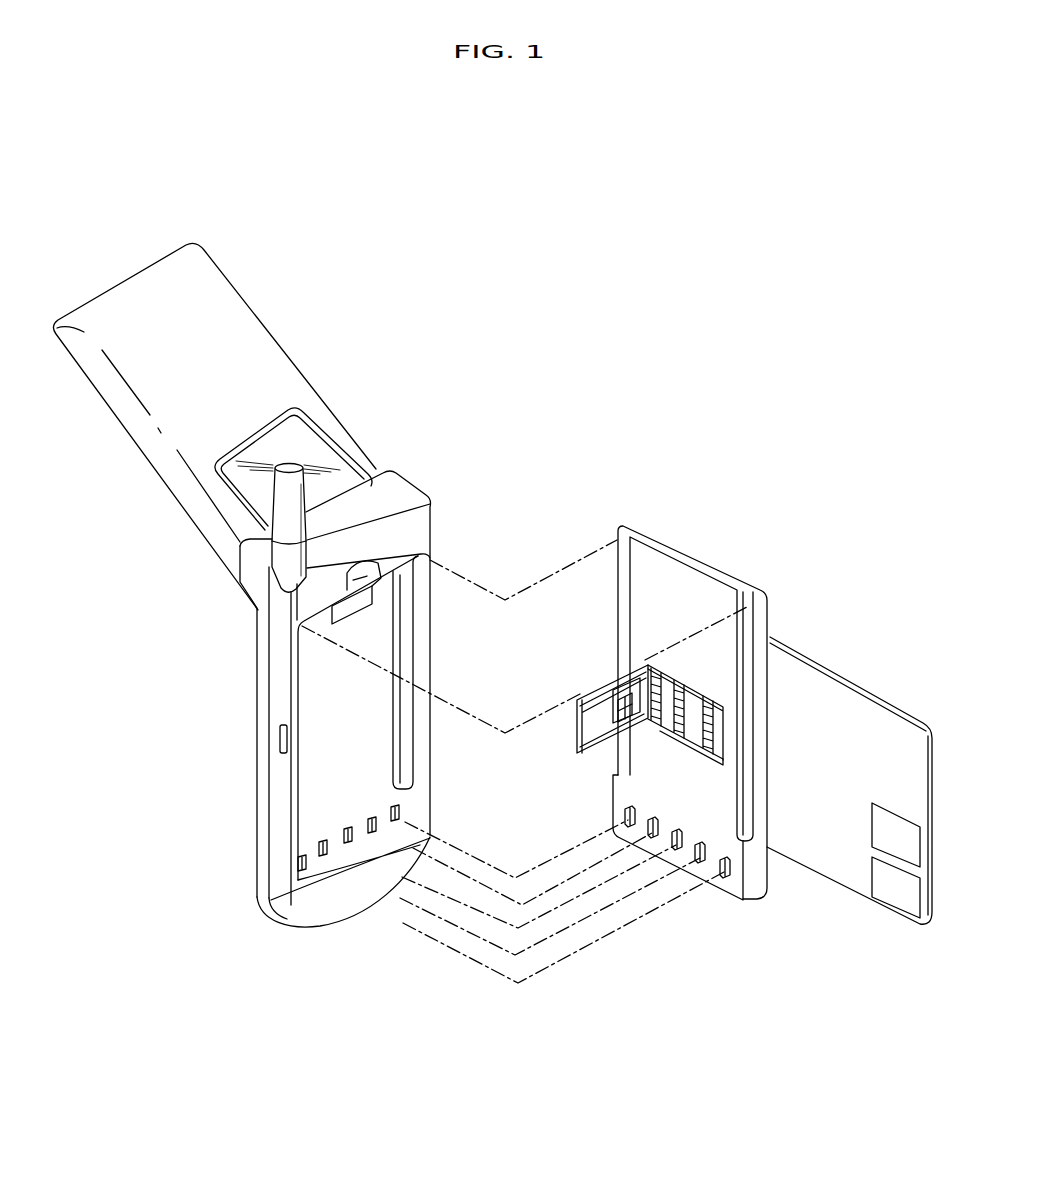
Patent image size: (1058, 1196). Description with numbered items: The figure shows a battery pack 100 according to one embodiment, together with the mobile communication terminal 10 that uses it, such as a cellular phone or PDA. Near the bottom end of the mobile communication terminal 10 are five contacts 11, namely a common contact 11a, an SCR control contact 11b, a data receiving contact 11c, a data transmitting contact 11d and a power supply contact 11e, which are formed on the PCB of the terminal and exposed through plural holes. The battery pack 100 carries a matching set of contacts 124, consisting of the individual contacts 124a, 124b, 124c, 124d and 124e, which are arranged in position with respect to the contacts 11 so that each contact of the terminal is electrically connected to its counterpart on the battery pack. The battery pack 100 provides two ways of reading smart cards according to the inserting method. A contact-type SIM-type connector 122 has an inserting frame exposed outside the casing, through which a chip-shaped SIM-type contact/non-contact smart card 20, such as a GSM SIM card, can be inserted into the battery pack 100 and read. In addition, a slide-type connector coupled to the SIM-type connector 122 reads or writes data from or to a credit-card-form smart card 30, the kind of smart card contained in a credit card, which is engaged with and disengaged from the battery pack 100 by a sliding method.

The mobile communication terminal 10 is at (407, 498).
The contacts 11 is at (339, 909).
The common contact 11a is at (302, 871).
The SCR control contact 11b is at (323, 856).
The data receiving contact 11c is at (348, 843).
The data transmitting contact 11d is at (372, 833).
The power supply contact 11e is at (412, 884).
The battery pack 100 is at (695, 563).
The SIM-type connector 122 is at (597, 686).
The contacts 124 is at (730, 918).
The contact 124a is at (630, 828).
The contact 124b is at (653, 839).
The contact 124c is at (677, 851).
The contact 124d is at (700, 864).
The contact 124e is at (789, 918).
The SIM-type contact/non-contact smart card 20 is at (580, 730).
The ID-1 type smart card 30 is at (806, 855).